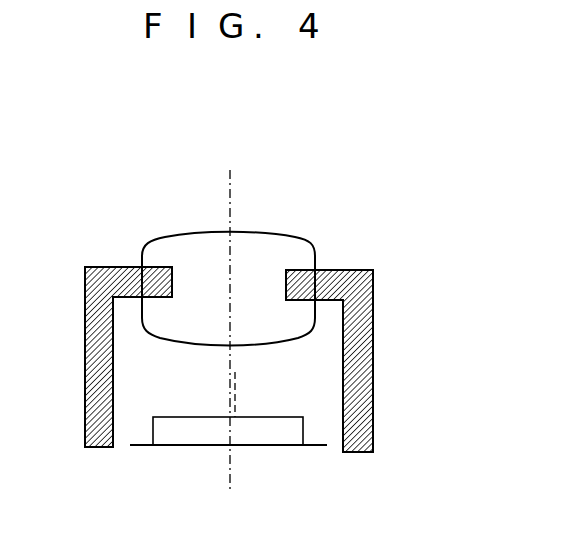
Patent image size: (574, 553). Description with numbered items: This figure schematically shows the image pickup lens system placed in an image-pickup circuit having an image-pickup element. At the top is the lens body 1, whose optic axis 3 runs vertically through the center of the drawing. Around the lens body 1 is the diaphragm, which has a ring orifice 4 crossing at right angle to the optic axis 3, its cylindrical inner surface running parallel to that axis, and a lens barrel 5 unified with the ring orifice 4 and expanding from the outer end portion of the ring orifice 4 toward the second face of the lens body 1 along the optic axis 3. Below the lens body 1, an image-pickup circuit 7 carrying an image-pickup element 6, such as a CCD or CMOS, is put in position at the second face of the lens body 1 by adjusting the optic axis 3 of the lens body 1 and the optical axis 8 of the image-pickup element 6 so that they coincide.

The lens body 1 is at (262, 243).
The optic axis 3 is at (229, 200).
The ring orifice 4 is at (120, 278).
The lens barrel 5 is at (370, 361).
The image-pickup element 6 is at (195, 427).
The image-pickup circuit 7 is at (314, 447).
The optical axis of the image-pickup element 8 is at (236, 417).